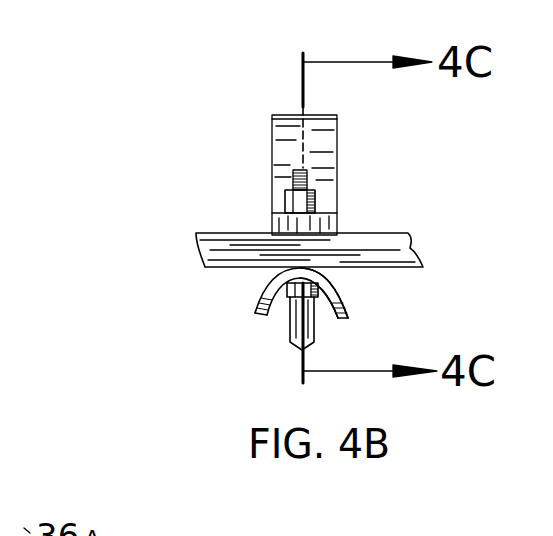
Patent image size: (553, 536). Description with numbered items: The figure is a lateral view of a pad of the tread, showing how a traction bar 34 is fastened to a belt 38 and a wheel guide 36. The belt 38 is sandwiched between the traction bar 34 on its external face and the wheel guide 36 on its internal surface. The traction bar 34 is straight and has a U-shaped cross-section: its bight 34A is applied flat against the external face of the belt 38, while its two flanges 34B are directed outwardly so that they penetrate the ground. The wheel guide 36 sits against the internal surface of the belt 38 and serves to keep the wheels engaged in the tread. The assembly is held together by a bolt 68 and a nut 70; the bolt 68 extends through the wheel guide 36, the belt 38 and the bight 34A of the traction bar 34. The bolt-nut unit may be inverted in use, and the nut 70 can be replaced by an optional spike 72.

The traction bar 34 is at (250, 286).
The bight 34A is at (345, 278).
The flanges 34B is at (350, 307).
The wheel guide 36 is at (325, 162).
The belt 38 is at (375, 250).
The bolt 68 is at (268, 321).
The nut 70 is at (288, 201).
The spike 72 is at (292, 322).